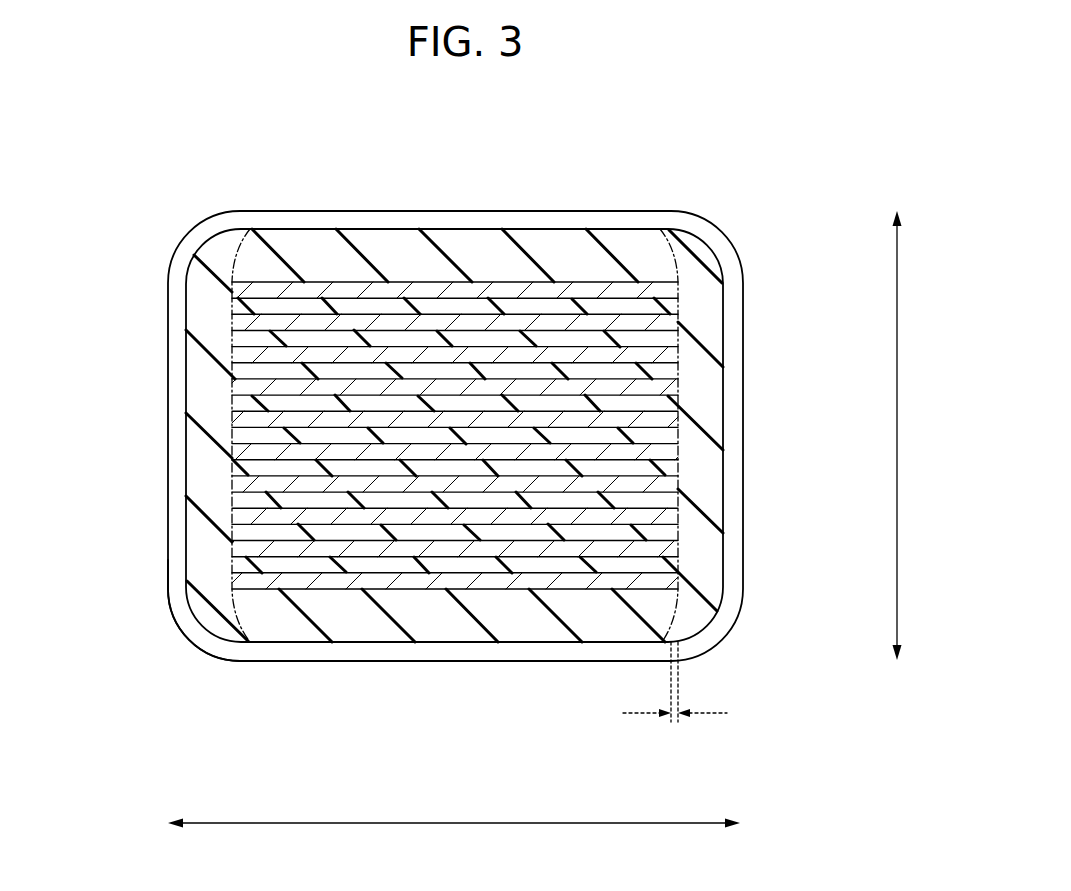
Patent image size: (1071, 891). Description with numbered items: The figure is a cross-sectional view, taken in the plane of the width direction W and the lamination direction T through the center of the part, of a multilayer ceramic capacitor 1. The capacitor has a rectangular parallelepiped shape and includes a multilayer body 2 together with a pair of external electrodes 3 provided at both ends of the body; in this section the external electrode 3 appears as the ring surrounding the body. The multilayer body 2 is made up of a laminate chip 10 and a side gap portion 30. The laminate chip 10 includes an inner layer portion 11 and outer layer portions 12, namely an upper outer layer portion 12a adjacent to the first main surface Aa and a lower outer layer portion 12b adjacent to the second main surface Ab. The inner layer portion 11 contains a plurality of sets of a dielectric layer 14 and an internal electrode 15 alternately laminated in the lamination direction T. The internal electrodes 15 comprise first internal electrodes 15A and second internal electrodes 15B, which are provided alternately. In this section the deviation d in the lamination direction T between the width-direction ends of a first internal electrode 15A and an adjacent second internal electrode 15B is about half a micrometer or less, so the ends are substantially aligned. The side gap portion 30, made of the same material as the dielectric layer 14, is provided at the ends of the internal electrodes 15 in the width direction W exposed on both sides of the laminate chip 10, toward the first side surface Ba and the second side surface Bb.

The multilayer ceramic capacitor 1 is at (722, 165).
The multilayer body 2 is at (225, 729).
The external electrode 3 is at (320, 220).
The laminate chip 10 is at (328, 625).
The inner layer portion 11 is at (232, 588).
The outer layer portion 12 is at (410, 240).
The upper outer layer portion 12a is at (445, 255).
The lower outer layer portion 12b is at (472, 615).
The dielectric layer 14 is at (257, 338).
The internal electrode 15 is at (108, 292).
The first internal electrode 15A is at (235, 293).
The second internal electrode 15B is at (243, 322).
The side gap portion 30 is at (222, 618).
The first main surface Aa is at (567, 227).
The second main surface Ab is at (563, 648).
The first side surface Ba is at (186, 540).
The second side surface Bb is at (722, 540).
The lamination direction T is at (907, 435).
The width direction W is at (454, 837).
The deviation d is at (675, 697).